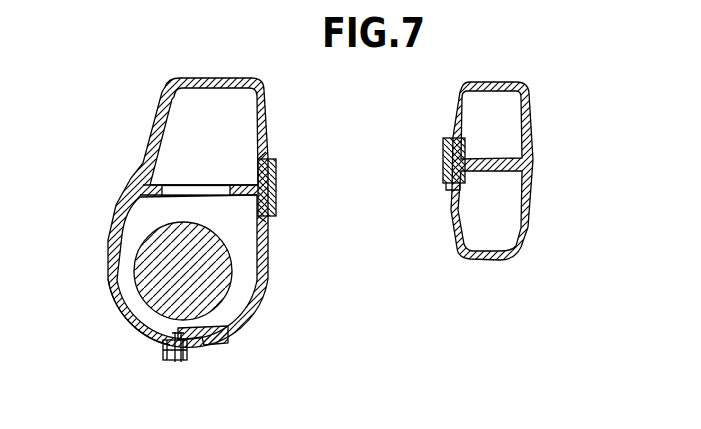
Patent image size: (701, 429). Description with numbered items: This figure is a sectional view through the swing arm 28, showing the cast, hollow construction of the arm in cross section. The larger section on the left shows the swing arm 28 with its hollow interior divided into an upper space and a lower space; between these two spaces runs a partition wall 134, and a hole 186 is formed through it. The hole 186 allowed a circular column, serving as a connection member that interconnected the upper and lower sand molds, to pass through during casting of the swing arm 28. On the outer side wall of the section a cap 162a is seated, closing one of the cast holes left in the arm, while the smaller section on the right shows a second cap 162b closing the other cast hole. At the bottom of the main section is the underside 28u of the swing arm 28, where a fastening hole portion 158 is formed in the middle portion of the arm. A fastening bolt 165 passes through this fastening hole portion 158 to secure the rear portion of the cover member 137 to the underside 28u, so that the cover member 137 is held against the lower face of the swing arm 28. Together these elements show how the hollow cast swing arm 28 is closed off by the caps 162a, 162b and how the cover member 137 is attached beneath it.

The swing arm 28 is at (450, 238).
The underside of the swing arm 28u is at (157, 342).
The partition wall 134 is at (190, 186).
The hole 186 is at (213, 186).
The cap 162a is at (277, 172).
The cap 162b is at (443, 150).
The fastening hole portion 158 is at (226, 334).
The fastening bolt 165 is at (172, 361).
The cover member 137 is at (183, 352).